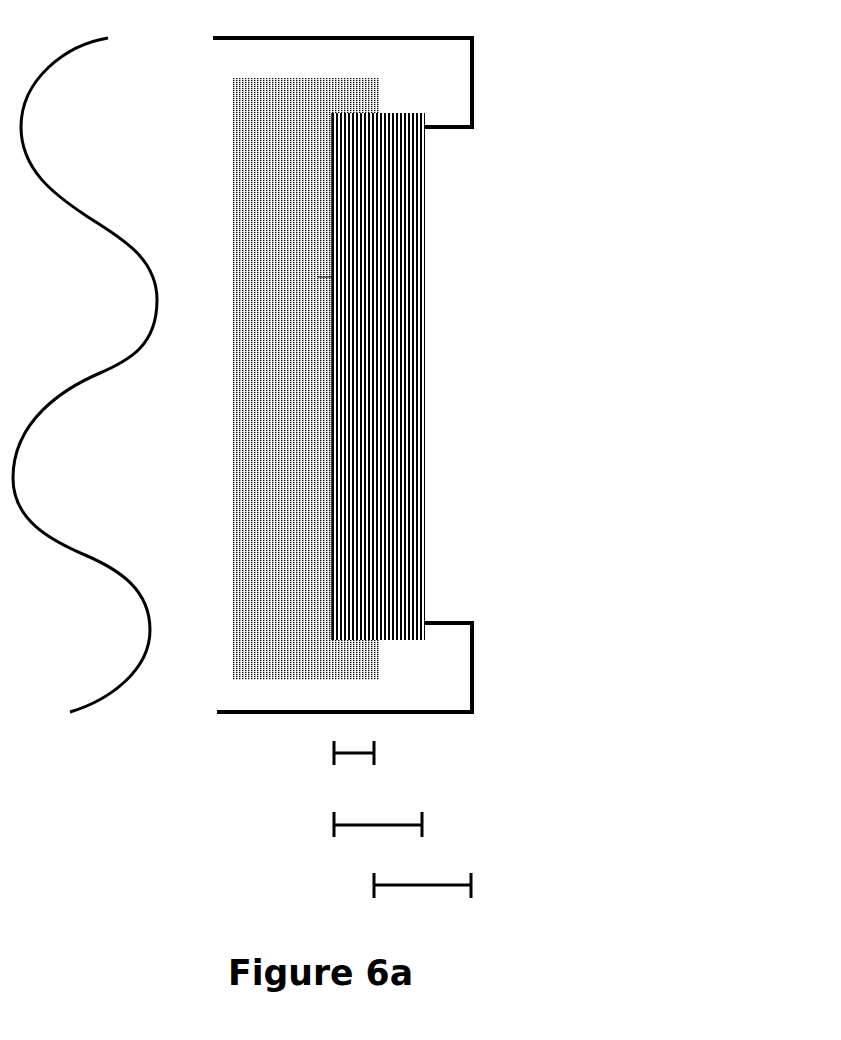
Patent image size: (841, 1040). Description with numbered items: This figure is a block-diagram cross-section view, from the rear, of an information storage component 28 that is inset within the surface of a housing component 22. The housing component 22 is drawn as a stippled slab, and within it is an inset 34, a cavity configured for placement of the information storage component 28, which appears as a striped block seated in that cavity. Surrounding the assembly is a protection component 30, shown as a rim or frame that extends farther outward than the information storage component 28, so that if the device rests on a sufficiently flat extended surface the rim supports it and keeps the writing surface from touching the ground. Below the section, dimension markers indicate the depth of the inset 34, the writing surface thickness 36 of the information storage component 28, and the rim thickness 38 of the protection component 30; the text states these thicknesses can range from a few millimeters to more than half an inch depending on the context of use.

The housing component 22 is at (364, 81).
The information storage component 28 is at (427, 404).
The protection component 30 is at (458, 67).
The inset 34 is at (354, 759).
The writing surface thickness 36 is at (378, 831).
The rim thickness 38 is at (422, 890).